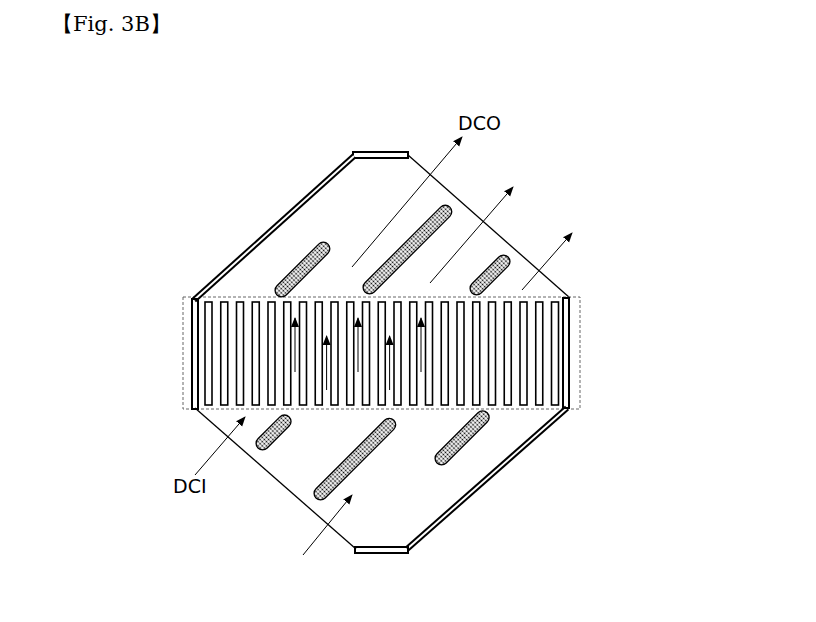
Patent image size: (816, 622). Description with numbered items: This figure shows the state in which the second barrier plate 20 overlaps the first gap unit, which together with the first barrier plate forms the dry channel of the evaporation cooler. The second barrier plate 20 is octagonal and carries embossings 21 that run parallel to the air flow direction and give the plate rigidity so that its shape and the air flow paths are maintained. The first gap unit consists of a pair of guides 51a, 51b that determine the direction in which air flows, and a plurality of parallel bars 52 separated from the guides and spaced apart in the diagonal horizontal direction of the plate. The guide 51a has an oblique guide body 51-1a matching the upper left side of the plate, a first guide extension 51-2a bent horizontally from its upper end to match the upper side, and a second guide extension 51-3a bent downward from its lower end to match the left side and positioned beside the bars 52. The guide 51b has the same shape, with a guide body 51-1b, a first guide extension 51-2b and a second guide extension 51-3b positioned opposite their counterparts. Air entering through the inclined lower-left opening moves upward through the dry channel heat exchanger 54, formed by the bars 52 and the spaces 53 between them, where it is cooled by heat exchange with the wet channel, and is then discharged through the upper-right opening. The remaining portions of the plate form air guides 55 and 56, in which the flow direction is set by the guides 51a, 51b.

The second barrier plate 20 is at (420, 222).
The embossing 21 is at (313, 478).
The guide 51a is at (282, 246).
The guide body 51-1a is at (291, 211).
The first guide extension 51-2a is at (377, 155).
The second guide extension 51-3a is at (184, 293).
The guide 51b is at (511, 437).
The guide body 51-1b is at (500, 473).
The first guide extension 51-2b is at (383, 553).
The second guide extension 51-3b is at (570, 365).
The bar 52 is at (225, 420).
The space 53 is at (232, 355).
The dry channel heat exchanger 54 is at (580, 333).
The air guide 55 is at (420, 205).
The air guide 56 is at (360, 549).